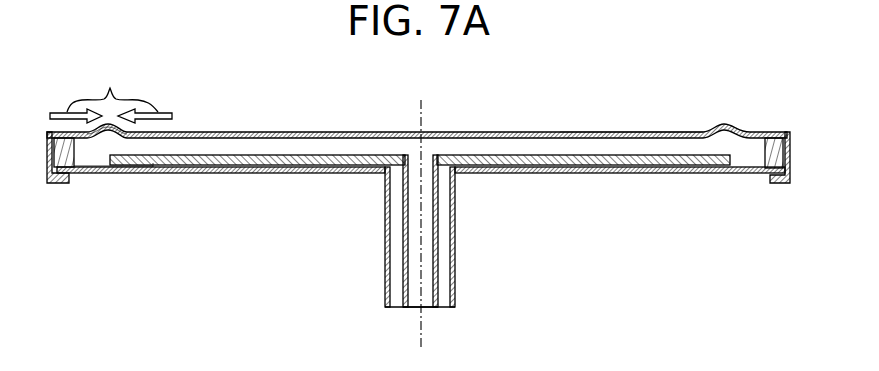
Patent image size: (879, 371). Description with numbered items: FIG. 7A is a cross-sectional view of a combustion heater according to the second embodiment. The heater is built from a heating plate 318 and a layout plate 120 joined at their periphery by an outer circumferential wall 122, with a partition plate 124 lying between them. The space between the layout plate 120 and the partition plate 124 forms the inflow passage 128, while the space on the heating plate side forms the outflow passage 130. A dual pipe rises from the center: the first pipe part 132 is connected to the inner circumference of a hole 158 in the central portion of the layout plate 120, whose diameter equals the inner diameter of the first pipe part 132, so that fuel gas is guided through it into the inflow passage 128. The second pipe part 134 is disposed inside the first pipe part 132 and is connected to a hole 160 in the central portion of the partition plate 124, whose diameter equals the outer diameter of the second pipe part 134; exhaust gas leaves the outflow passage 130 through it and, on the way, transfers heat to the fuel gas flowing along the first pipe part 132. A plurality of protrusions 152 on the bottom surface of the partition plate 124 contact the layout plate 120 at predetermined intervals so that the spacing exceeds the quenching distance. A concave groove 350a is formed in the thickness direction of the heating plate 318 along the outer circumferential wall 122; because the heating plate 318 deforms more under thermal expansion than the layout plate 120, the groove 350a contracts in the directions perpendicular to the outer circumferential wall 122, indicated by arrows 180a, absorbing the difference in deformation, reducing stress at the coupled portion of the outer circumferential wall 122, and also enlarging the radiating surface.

The layout plate 120 is at (550, 175).
The outer circumferential wall 122 is at (765, 158).
The partition plate 124 is at (487, 154).
The inflow passage 128 is at (222, 175).
The outflow passage 130 is at (222, 148).
The first pipe part 132 is at (458, 275).
The second pipe part 134 is at (438, 300).
The protrusions 152 is at (683, 168).
The hole 158 is at (405, 156).
The hole 160 is at (433, 155).
The arrows 180a is at (111, 92).
The heating plate 318 is at (565, 132).
The groove 350a is at (110, 138).